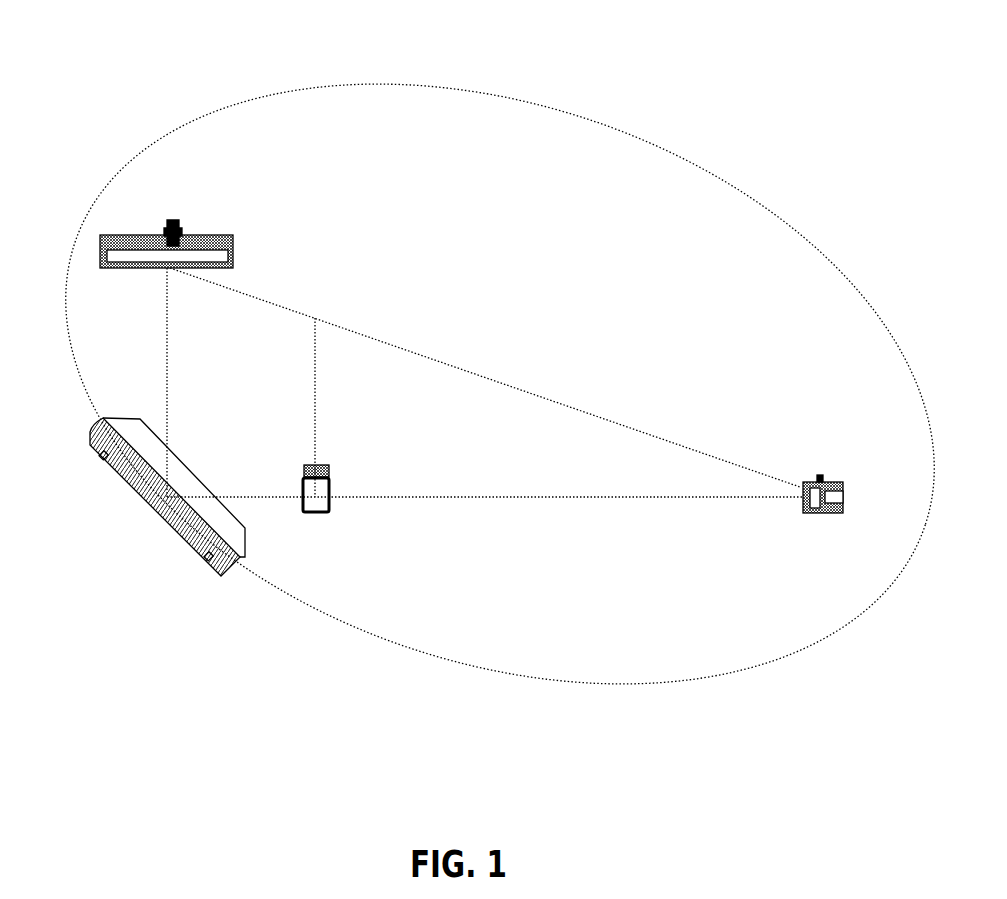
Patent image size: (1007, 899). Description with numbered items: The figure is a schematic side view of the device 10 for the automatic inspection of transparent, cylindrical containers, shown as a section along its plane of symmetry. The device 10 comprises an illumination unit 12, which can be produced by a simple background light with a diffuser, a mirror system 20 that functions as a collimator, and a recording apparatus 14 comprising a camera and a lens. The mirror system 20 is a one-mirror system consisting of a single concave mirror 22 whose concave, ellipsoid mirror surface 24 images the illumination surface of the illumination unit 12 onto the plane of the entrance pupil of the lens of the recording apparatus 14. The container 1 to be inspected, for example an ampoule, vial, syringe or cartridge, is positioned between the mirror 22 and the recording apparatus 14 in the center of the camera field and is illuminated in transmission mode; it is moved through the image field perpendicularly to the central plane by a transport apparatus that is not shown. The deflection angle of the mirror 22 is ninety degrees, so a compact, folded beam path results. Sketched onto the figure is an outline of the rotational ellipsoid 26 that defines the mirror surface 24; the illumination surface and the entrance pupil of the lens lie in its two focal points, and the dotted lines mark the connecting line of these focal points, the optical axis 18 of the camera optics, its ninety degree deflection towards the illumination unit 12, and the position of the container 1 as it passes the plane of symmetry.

The device 10 is at (747, 93).
The illumination unit 12 is at (243, 220).
The recording apparatus 14 is at (807, 458).
The container 1 is at (338, 523).
The optical axis 18 is at (485, 498).
The mirror system 20 is at (190, 544).
The concave mirror 22 is at (227, 578).
The mirror surface 24 is at (137, 463).
The rotational ellipsoid 26 is at (673, 678).